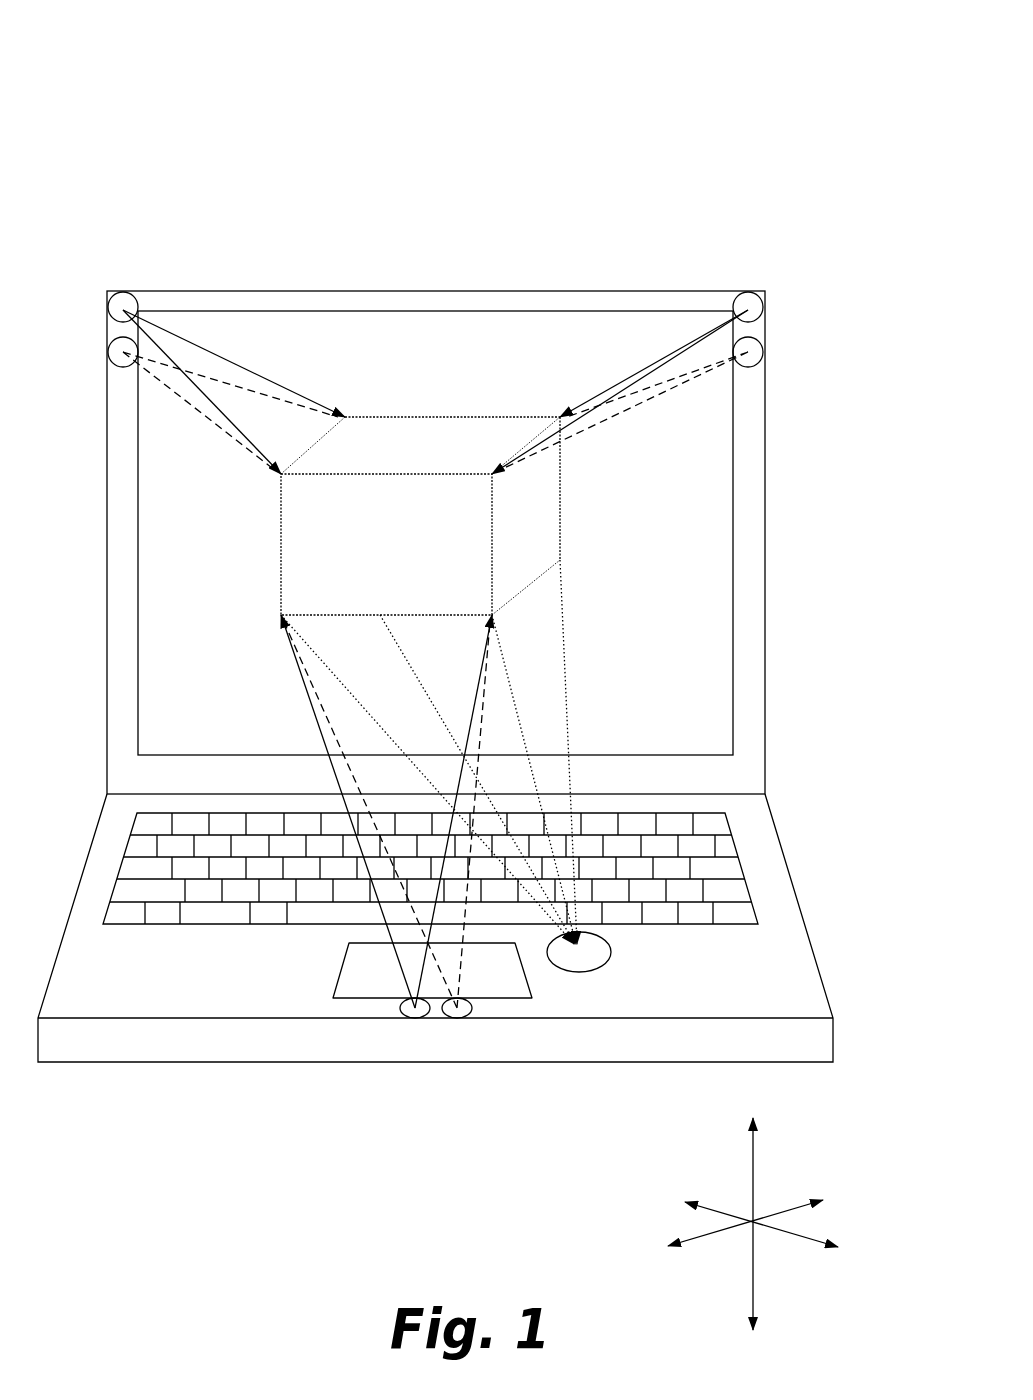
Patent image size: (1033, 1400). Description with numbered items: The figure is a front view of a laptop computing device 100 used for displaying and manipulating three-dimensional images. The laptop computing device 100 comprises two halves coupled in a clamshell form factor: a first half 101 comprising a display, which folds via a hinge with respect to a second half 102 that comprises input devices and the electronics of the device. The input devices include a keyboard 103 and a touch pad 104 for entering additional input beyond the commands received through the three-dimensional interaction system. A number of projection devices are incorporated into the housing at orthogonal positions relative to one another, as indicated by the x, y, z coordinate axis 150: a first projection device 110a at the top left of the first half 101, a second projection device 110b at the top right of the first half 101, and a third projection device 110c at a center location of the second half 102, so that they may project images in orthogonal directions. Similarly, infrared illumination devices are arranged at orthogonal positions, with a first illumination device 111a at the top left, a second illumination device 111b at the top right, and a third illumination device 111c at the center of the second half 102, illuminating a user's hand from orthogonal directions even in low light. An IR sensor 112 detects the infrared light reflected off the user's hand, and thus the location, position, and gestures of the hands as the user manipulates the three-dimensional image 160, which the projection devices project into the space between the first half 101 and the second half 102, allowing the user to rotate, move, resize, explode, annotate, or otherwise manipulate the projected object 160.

The laptop computing device 100 is at (193, 88).
The first half 101 is at (508, 340).
The second half 102 is at (132, 988).
The keyboard 103 is at (227, 907).
The touch pad 104 is at (352, 988).
The first projection device 110a is at (117, 297).
The first illumination device 111a is at (110, 348).
The second projection device 110b is at (758, 292).
The second illumination device 111b is at (762, 345).
The third projection device 110c is at (415, 1017).
The third illumination device 111c is at (448, 1017).
The IR sensor 112 is at (580, 960).
The x, y, z coordinate axis 150 is at (722, 1263).
The three-dimensional image 160 is at (480, 568).